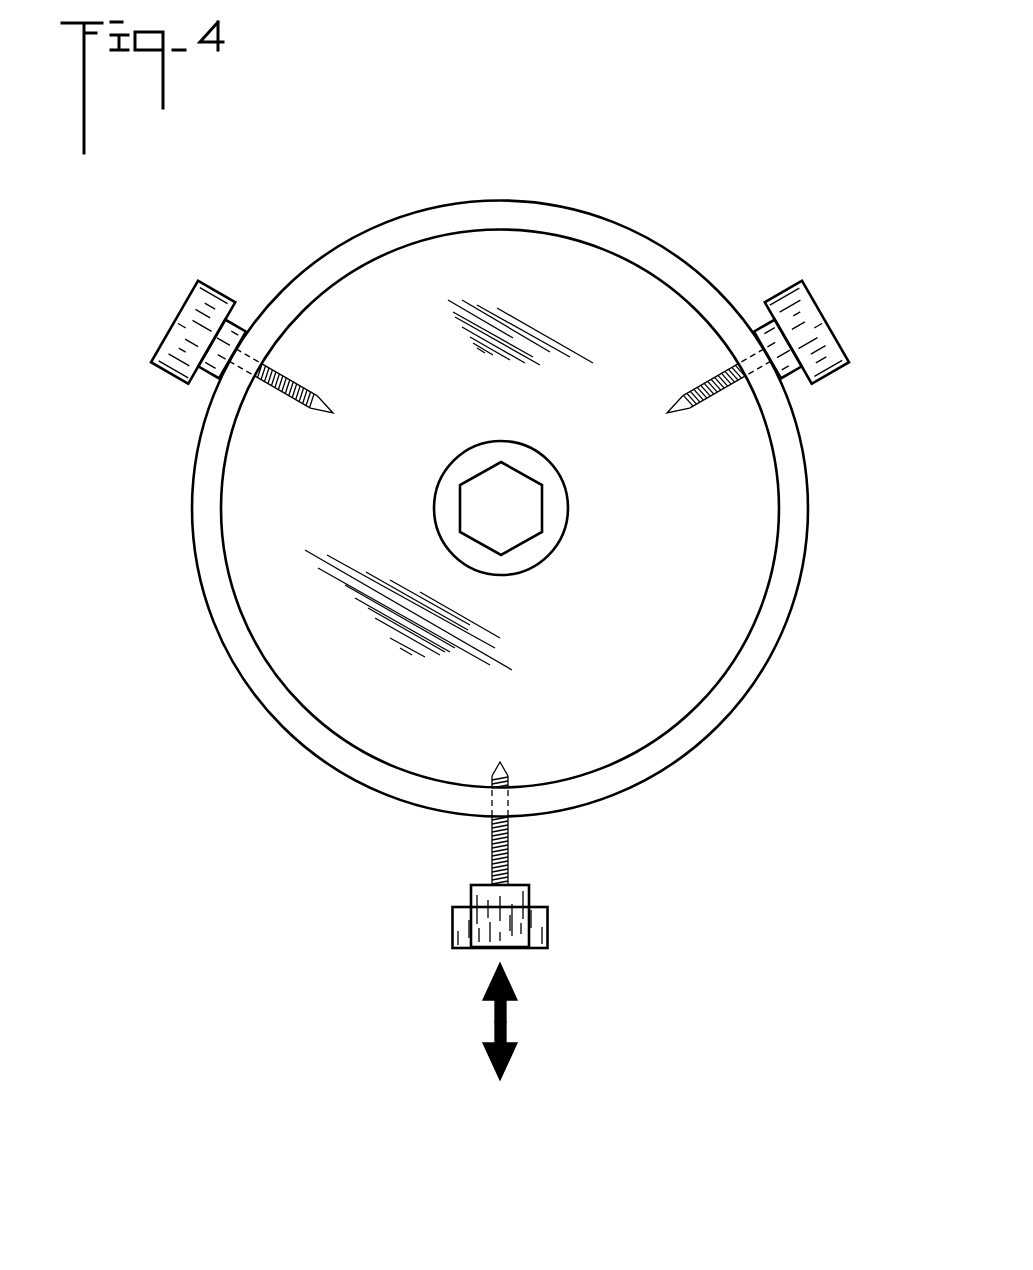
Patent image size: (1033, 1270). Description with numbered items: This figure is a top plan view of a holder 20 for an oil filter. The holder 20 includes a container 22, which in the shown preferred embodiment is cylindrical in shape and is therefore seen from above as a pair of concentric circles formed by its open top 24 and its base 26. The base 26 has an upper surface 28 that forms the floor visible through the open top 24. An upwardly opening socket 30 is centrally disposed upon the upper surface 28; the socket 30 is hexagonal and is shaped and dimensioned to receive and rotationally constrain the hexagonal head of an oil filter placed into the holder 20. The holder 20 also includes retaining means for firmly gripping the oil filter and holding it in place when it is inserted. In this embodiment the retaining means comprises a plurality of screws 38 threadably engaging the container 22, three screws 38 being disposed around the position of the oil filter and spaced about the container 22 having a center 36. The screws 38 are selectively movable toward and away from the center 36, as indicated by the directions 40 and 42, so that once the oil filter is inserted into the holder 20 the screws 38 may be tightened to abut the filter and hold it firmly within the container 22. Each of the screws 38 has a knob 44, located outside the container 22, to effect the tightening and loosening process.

The holder 20 is at (670, 103).
The container 22 is at (665, 248).
The open top 24 is at (387, 243).
The base 26 is at (482, 275).
The upper surface 28 is at (626, 596).
The socket 30 is at (559, 473).
The center 36 is at (500, 507).
The screws 38 is at (505, 863).
The direction 40 is at (513, 987).
The direction 42 is at (512, 1060).
The knob 44 is at (452, 933).